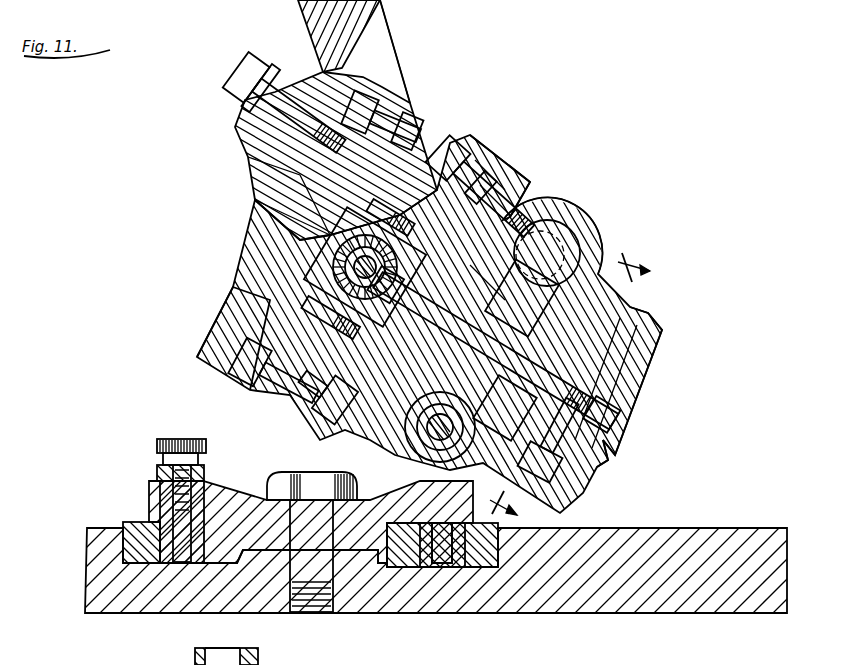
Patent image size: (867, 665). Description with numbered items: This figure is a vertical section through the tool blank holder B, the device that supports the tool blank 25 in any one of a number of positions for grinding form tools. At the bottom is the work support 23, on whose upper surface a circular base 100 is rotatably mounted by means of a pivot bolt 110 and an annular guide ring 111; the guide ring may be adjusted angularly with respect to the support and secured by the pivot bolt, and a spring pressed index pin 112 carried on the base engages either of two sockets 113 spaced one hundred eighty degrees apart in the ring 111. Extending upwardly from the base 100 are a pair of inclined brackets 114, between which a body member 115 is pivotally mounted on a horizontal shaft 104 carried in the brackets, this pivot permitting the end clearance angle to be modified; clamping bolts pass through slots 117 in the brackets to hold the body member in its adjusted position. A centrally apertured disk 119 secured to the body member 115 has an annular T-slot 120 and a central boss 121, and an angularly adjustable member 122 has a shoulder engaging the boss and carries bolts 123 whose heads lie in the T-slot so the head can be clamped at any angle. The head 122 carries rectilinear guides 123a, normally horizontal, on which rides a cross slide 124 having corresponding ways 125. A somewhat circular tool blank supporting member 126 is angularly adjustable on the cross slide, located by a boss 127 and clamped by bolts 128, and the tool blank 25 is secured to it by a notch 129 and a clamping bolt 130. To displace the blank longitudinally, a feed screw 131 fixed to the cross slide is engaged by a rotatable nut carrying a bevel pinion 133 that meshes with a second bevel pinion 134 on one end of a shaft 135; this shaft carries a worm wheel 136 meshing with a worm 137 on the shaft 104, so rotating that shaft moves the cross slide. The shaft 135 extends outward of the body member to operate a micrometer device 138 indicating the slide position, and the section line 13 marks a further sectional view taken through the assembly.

The work support 23 is at (715, 532).
The tool blank 25 is at (300, 27).
The circular base 100 is at (245, 497).
The horizontal shaft 104 is at (350, 460).
The pivot bolt 110 is at (303, 575).
The annular guide ring 111 is at (130, 525).
The index pin 112 is at (178, 438).
The sockets 113 is at (182, 565).
The inclined brackets 114 is at (340, 470).
The body member 115 is at (515, 235).
The slots 117 is at (570, 225).
The centrally apertured disk 119 is at (500, 195).
The annular T-slot 120 is at (495, 175).
The central boss 121 is at (510, 220).
The angularly adjustable member 122 is at (505, 150).
The bolts 123 is at (460, 142).
The rectilinear guides 123a is at (446, 148).
The cross slide 124 is at (415, 130).
The ways 125 is at (252, 170).
The tool blank supporting member 126 is at (245, 205).
The boss 127 is at (345, 262).
The bolts 128 is at (245, 310).
The notch 129 is at (250, 155).
The clamping bolt 130 is at (245, 117).
The feed screw 131 is at (260, 240).
The bevel pinion 133 is at (250, 222).
The second bevel pinion 134 is at (400, 300).
The shaft 135 is at (543, 345).
The worm wheel 136 is at (578, 262).
The worm 137 is at (485, 432).
The micrometer device 138 is at (648, 311).
The section line 13- 13 is at (583, 389).
The tool blank holder B is at (396, 76).